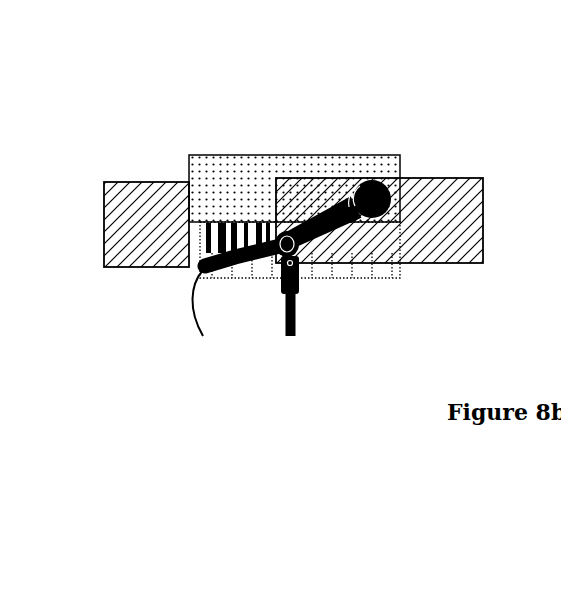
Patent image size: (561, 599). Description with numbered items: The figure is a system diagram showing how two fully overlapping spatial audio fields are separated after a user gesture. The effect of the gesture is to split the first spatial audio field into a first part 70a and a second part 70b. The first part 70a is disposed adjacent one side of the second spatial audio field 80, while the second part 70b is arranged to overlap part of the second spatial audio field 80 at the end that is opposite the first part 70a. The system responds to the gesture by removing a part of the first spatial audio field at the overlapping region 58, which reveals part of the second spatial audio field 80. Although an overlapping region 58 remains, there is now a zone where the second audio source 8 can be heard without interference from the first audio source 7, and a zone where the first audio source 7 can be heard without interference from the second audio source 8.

The overlapping region 58 is at (294, 201).
The second spatial audio field 80 is at (229, 155).
The second audio source 8 is at (391, 280).
The first part 70a is at (124, 182).
The second part 70b is at (433, 178).
The first audio source 7 is at (278, 303).